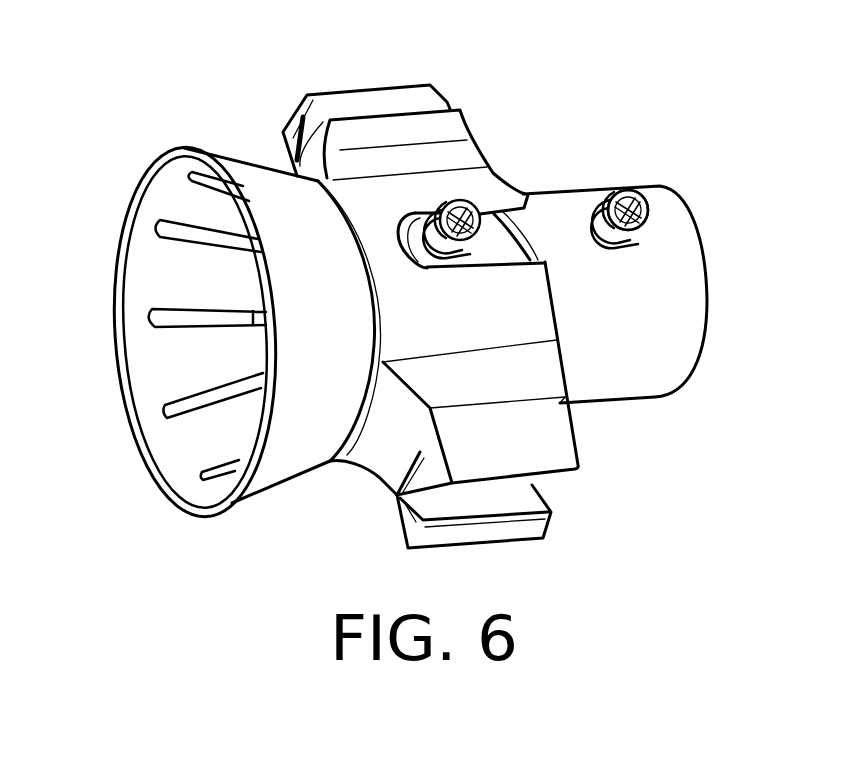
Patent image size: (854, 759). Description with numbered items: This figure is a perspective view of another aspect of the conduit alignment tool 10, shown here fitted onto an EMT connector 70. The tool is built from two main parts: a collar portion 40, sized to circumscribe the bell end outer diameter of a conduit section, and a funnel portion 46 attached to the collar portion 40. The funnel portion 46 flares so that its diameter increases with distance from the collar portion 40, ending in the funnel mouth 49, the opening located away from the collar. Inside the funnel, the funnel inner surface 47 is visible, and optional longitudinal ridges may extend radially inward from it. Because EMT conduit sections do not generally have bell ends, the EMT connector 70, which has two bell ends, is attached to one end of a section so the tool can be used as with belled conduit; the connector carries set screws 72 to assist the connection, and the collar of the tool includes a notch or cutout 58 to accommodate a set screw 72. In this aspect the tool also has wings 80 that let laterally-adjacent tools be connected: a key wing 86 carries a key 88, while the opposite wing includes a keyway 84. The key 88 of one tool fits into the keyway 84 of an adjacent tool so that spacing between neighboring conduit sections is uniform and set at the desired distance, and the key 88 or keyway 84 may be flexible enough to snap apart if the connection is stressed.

The conduit alignment tool 10 is at (218, 142).
The collar portion 40 is at (540, 342).
The funnel portion 46 is at (260, 493).
The funnel inner surface 47 is at (172, 450).
The funnel mouth 49 is at (112, 315).
The notch or cutout 58 is at (543, 262).
The EMT connector 70 is at (603, 190).
The set screw 72 is at (472, 208).
The wings 80 is at (464, 116).
The keyway 84 is at (567, 485).
The key wing 86 is at (475, 202).
The key 88 is at (360, 92).